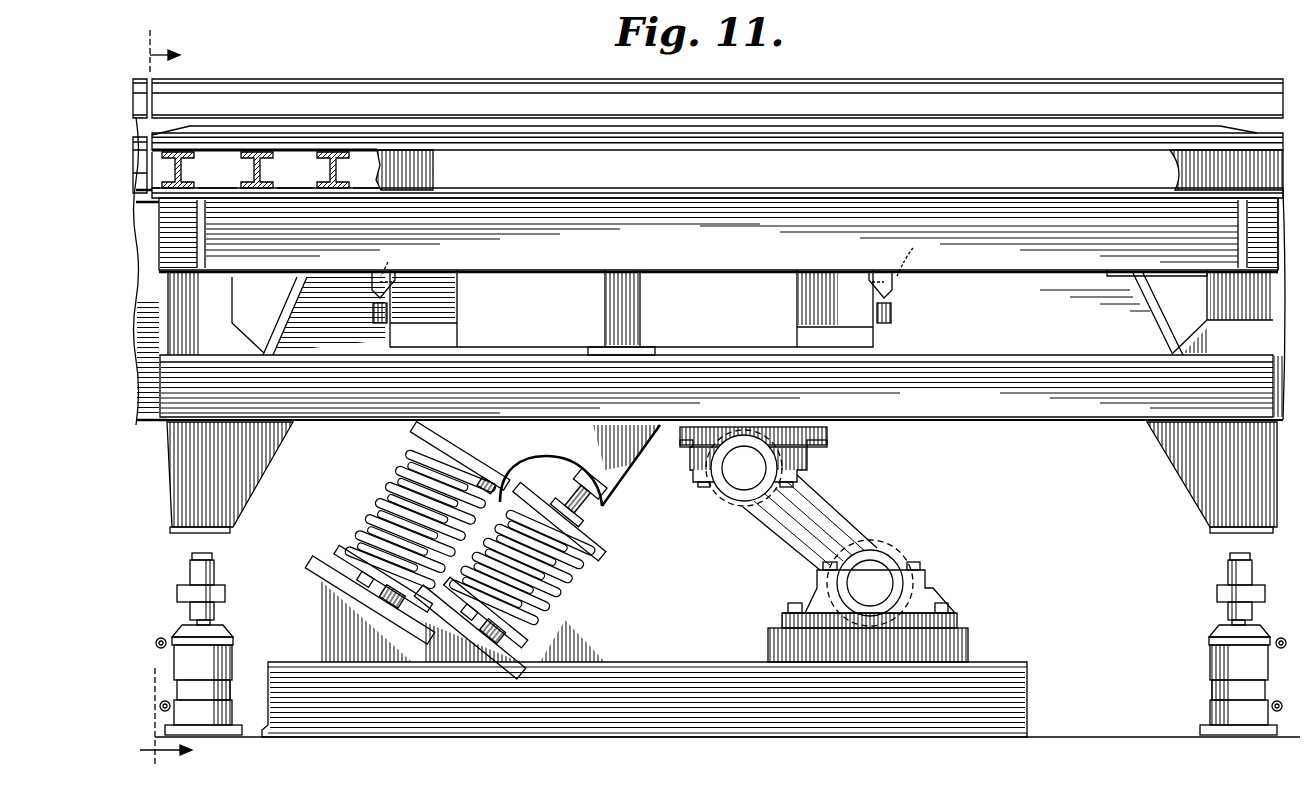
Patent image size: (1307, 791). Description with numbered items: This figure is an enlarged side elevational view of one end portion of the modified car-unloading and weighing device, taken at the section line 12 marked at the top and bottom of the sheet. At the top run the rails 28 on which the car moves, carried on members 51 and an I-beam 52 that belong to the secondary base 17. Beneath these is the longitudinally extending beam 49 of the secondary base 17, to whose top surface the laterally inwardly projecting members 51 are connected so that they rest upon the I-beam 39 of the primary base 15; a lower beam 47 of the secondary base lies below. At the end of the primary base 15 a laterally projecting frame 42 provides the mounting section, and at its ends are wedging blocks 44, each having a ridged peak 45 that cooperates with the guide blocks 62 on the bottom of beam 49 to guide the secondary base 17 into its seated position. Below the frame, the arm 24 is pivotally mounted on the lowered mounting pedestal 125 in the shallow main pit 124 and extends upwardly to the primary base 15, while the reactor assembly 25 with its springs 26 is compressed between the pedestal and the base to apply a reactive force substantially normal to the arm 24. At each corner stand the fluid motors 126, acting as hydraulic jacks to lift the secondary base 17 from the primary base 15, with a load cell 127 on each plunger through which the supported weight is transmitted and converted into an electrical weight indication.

The section line 12- 12 is at (152, 397).
The primary base 15 is at (137, 425).
The secondary base 17 is at (1002, 424).
The arms 24 is at (840, 508).
The reactor assemblies 25 is at (383, 476).
The springs 26 is at (363, 513).
The rails 28 is at (790, 135).
The I-beams 39 is at (1014, 325).
The frame 42 is at (519, 347).
The wedging block 44 is at (377, 312).
The peak 45 is at (661, 257).
The beam 47 is at (1012, 367).
The beam 49 is at (705, 248).
The members 51 is at (345, 173).
The I-beam 52 is at (490, 130).
The guide blocks 62 is at (372, 290).
The main pit 124 is at (1113, 722).
The mounting pedestals 125 is at (800, 712).
The fluid motors 126 is at (228, 685).
The load cells 127 is at (212, 572).